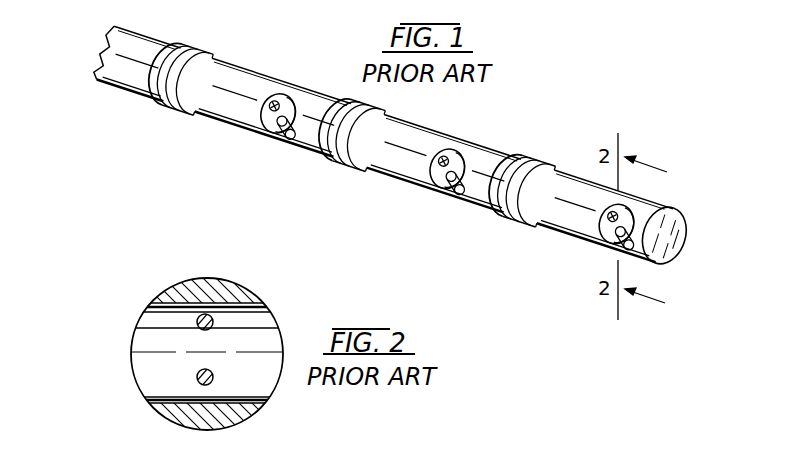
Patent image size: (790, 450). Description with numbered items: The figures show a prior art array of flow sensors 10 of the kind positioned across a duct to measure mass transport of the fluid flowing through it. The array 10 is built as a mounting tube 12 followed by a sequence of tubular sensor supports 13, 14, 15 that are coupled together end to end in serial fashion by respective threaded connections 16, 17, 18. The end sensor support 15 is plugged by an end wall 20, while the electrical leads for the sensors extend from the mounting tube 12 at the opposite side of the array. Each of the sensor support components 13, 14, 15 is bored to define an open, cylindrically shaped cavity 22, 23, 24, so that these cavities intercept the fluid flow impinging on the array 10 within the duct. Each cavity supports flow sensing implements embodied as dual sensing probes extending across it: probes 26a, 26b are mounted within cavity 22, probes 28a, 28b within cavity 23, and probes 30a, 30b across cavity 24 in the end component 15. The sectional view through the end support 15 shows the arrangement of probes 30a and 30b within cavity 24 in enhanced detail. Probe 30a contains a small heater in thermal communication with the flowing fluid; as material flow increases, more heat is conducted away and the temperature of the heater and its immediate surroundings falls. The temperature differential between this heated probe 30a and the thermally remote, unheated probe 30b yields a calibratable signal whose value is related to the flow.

In FIG. 1, the array of flow sensors 10 is at (561, 116).
In FIG. 1, the mounting tube 12 is at (155, 54).
In FIG. 1, the tubular sensor support 13 is at (273, 122).
In FIG. 1, the tubular sensor support 14 is at (444, 178).
In FIG. 1, the end sensor support 15 is at (614, 226).
In FIG. 2, the end sensor support 15 is at (209, 343).
In FIG. 1, the threaded connection 16 is at (198, 68).
In FIG. 1, the threaded connection 17 is at (377, 113).
In FIG. 1, the threaded connection 18 is at (550, 170).
In FIG. 1, the end wall 20 is at (684, 232).
In FIG. 1, the cavity 22 is at (250, 141).
In FIG. 1, the cavity 23 is at (419, 196).
In FIG. 1, the cavity 24 is at (569, 241).
In FIG. 2, the cavity 24 is at (157, 373).
In FIG. 1, the probe 26a is at (282, 138).
In FIG. 1, the probe 26b is at (268, 127).
In FIG. 1, the probe 28a is at (450, 192).
In FIG. 1, the probe 28b is at (427, 183).
In FIG. 1, the heater probe 30a is at (590, 254).
In FIG. 2, the heater probe 30a is at (214, 378).
In FIG. 1, the probe 30b is at (565, 232).
In FIG. 2, the probe 30b is at (214, 321).